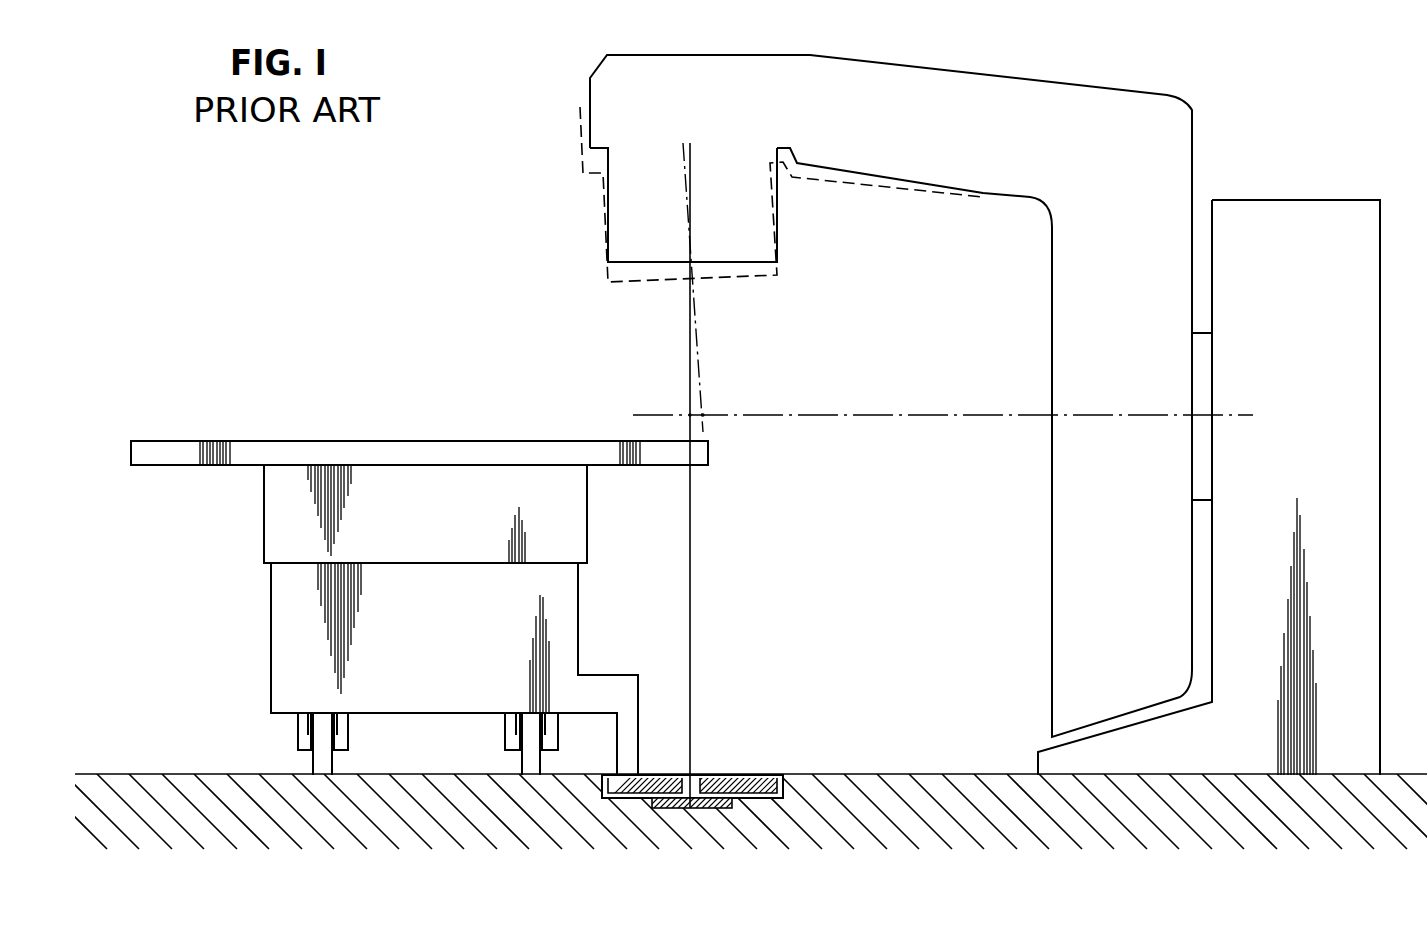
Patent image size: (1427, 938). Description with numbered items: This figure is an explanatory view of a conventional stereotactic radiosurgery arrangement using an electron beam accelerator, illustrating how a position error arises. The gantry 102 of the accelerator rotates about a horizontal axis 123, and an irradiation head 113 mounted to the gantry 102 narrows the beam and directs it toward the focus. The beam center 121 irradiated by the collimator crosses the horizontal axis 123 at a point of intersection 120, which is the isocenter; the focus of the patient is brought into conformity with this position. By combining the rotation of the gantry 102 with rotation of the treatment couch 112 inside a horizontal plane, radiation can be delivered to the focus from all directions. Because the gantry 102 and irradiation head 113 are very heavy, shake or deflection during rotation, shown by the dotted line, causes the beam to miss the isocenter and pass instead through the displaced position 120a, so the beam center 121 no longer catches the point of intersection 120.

The gantry 102 is at (747, 55).
The irradiation head 113 is at (778, 231).
The treatment couch 112 is at (317, 440).
The point of intersection 120 is at (690, 415).
The displaced beam focus position 120a is at (703, 415).
The beam center 121 is at (688, 322).
The horizontal axis 123 is at (948, 413).